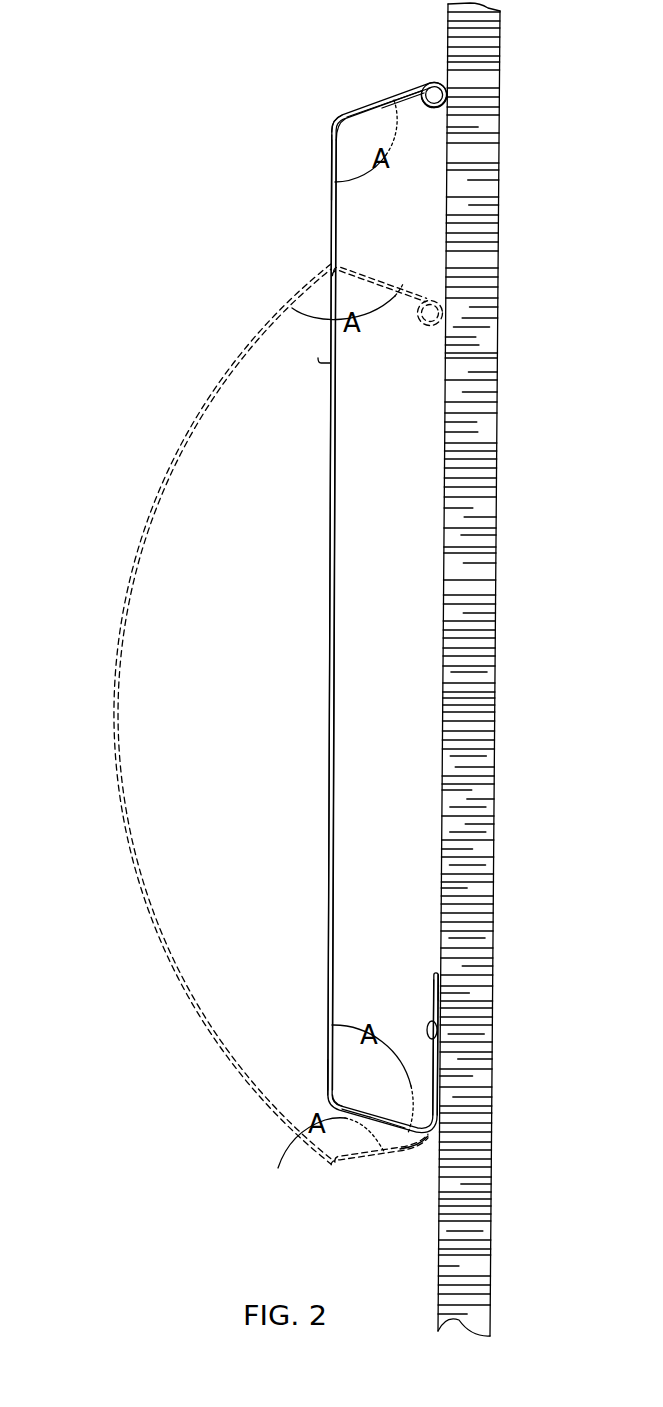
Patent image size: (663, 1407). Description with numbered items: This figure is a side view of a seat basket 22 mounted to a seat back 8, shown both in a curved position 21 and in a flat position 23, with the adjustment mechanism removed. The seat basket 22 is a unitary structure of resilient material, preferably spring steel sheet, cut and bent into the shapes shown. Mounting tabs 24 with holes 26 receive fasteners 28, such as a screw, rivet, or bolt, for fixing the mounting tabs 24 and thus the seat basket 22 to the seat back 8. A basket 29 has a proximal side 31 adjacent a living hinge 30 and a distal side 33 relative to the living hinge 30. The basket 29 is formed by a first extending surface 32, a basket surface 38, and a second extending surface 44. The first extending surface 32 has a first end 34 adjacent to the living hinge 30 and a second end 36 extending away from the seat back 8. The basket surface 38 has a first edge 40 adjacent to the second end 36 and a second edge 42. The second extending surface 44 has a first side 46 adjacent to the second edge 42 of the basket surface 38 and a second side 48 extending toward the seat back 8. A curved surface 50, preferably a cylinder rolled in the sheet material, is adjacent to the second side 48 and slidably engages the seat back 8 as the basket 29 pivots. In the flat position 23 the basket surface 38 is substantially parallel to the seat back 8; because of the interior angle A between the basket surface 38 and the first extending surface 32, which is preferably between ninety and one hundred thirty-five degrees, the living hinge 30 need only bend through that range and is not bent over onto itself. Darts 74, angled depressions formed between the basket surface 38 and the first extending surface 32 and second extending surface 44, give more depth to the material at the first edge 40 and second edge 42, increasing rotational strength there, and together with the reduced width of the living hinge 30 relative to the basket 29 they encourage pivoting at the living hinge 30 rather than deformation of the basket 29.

The seat back 8 is at (496, 681).
The curved position 21 is at (148, 535).
The seat basket 22 is at (329, 690).
The flat position 23 is at (330, 567).
The mounting tabs 24 is at (436, 975).
The holes 26 is at (435, 1003).
The fasteners 28 is at (430, 1026).
The basket 29 is at (128, 597).
The living hinge 30 is at (425, 1127).
The proximal side 31 is at (348, 1113).
The first extending surface 32 is at (382, 1128).
The distal side 33 is at (372, 104).
The first end 34 is at (401, 1148).
The second end 36 is at (333, 1118).
The basket surface 38 is at (329, 812).
The first edge 40 is at (328, 1076).
The second edge 42 is at (332, 142).
The second extending surface 44 is at (400, 93).
The first side 46 is at (344, 112).
The second side 48 is at (418, 97).
The curved surface 50 is at (441, 84).
The darts 74 is at (339, 136).